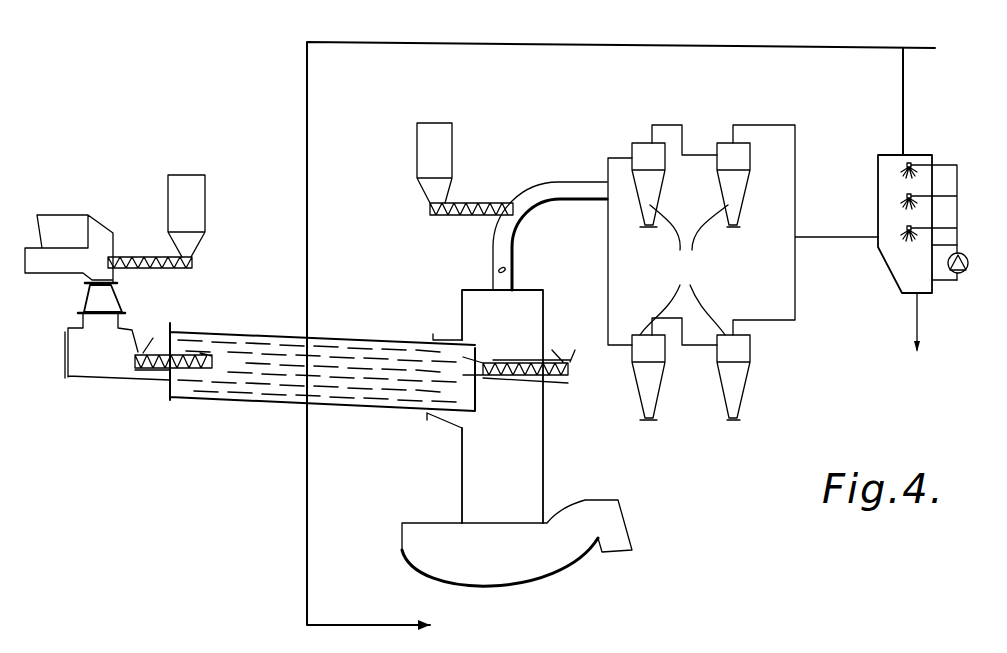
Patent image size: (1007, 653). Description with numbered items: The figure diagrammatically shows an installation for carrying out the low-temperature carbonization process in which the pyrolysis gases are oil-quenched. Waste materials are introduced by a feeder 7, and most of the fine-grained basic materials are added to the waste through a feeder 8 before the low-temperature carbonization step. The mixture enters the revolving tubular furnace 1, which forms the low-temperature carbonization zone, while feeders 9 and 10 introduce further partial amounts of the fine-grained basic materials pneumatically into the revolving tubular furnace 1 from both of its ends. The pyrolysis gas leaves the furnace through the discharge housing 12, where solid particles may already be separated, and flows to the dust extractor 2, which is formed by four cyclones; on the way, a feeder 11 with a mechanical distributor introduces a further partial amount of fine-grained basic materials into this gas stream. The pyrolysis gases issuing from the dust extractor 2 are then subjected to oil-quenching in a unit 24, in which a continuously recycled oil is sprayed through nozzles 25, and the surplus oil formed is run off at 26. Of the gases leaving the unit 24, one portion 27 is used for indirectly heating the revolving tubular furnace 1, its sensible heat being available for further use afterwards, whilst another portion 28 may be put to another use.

The revolving tubular furnace 1 is at (372, 338).
The dust extractor 2 is at (743, 272).
The feeder 7 is at (60, 262).
The feeder 8 is at (190, 177).
The feeder 9 is at (142, 337).
The feeder 10 is at (561, 356).
The feeder 11 is at (432, 122).
The discharge housing 12 is at (472, 288).
The unit 24 is at (878, 183).
The nozzles 25 is at (912, 196).
The surplus oil run-off 26 is at (912, 344).
The portion of pyrolysis gases 27 is at (389, 40).
The portion of pyrolysis gases 28 is at (922, 45).